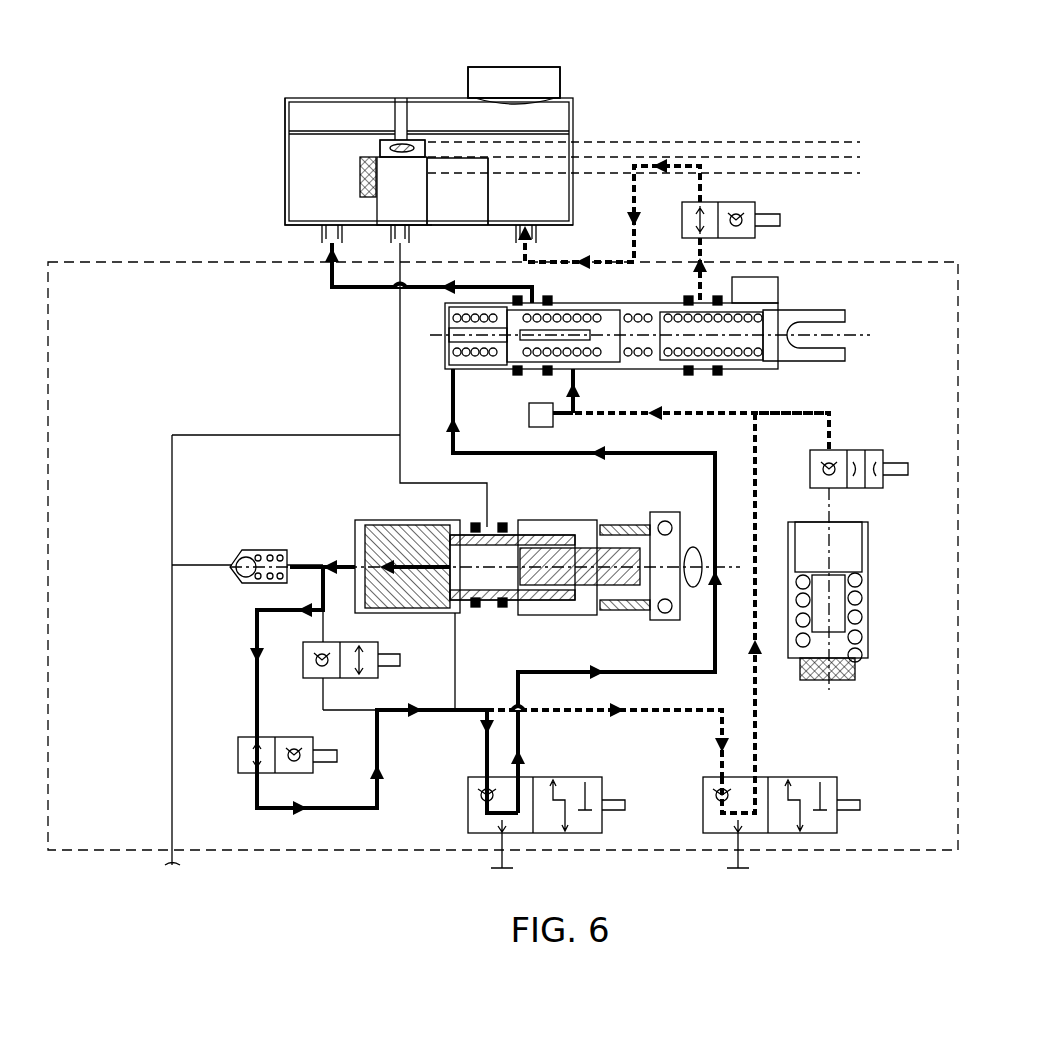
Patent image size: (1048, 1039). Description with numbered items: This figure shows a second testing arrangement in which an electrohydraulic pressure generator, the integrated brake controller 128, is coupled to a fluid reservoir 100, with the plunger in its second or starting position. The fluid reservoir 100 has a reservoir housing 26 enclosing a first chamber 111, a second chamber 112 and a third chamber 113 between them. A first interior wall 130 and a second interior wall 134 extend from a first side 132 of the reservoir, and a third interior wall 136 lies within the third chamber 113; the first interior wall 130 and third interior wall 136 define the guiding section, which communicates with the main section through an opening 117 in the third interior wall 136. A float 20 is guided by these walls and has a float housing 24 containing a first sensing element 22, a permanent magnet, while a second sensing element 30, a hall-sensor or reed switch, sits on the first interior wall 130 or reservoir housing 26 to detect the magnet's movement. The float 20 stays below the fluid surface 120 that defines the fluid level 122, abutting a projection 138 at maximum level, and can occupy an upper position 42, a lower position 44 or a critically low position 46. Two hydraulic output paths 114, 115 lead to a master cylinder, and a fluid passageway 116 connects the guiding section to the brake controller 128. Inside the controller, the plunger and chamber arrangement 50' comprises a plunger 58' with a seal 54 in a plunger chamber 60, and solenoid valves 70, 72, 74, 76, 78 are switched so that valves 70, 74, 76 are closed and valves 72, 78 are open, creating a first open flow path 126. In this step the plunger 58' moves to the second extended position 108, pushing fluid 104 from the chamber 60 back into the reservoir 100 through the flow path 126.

The fluid reservoir 100 is at (270, 125).
The float 20 is at (360, 132).
The first sensing element 22 is at (418, 140).
The float housing 24 is at (383, 140).
The reservoir housing 26 is at (285, 213).
The second sensing element 30 is at (360, 178).
The upper position 42 is at (768, 140).
The lower position 44 is at (818, 155).
The critically low position 46 is at (856, 175).
The plunger and chamber arrangement 50' is at (485, 539).
The seal 54 is at (380, 522).
The plunger 58' is at (475, 537).
The plunger chamber 60 is at (422, 612).
The solenoid valve 70 is at (845, 450).
The solenoid valve 72 is at (238, 773).
The solenoid valve 74 is at (533, 833).
The solenoid valve 76 is at (768, 833).
The solenoid valve 78 is at (755, 236).
The fluid 104 is at (445, 125).
The second extended position 108 is at (395, 512).
The first chamber 111 is at (320, 216).
The second chamber 112 is at (514, 216).
The third chamber 113 is at (385, 183).
The hydraulic output path 114 is at (325, 262).
The hydraulic output path 115 is at (555, 262).
The fluid passageway 116 is at (398, 262).
The opening 117 is at (434, 226).
The fluid surface 120 is at (514, 82).
The fluid level 122 is at (514, 82).
The first open flow path 126 is at (440, 290).
The electrohydraulic pressure generator 128 is at (960, 318).
The first interior wall 130 is at (372, 220).
The first side 132 is at (408, 228).
The second interior wall 134 is at (440, 160).
The third interior wall 136 is at (490, 190).
The projection 138 is at (401, 118).